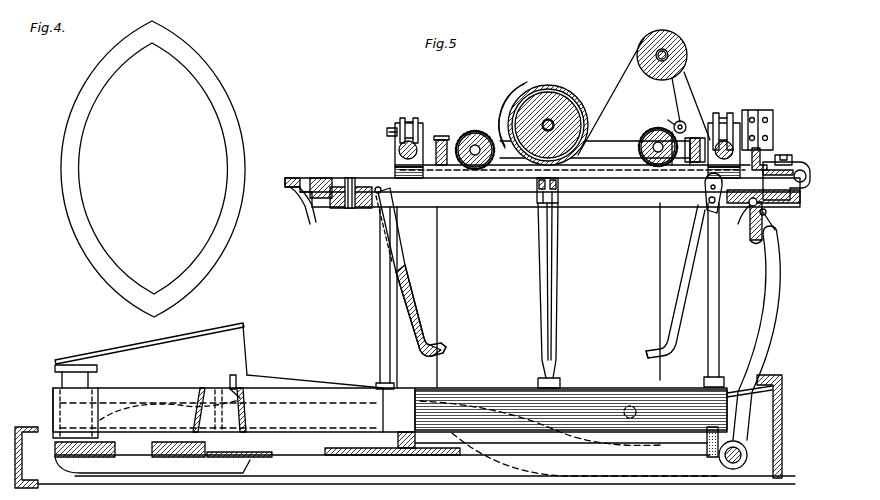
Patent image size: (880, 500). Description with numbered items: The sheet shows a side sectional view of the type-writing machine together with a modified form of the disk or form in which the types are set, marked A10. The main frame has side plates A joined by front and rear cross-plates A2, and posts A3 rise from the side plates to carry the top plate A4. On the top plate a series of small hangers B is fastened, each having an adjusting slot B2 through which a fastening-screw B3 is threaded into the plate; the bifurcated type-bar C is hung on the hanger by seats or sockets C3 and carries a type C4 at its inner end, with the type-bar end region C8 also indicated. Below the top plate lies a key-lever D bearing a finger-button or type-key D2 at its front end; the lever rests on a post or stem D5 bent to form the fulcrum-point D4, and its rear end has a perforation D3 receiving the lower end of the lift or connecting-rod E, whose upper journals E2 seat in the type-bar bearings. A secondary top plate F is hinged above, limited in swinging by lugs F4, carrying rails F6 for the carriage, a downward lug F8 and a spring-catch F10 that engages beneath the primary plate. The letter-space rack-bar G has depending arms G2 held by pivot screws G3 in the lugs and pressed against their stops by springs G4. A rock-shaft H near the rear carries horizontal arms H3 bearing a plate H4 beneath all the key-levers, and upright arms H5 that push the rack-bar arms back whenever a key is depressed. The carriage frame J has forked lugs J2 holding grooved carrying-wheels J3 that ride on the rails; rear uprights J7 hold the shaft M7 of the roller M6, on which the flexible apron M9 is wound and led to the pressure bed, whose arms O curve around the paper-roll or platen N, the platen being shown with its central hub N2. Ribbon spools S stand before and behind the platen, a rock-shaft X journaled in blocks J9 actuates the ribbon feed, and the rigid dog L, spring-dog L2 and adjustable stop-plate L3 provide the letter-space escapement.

In FIG. 4, the lens-shaped blank A10 is at (212, 123).
In FIG. 5, the side plate A is at (416, 464).
In FIG. 5, the cross-plate A2 is at (789, 432).
In FIG. 5, the post A3 is at (536, 295).
In FIG. 5, the top plate A4 is at (498, 329).
In FIG. 5, the plate or hanger B is at (362, 186).
In FIG. 5, the adjusting slot B2 is at (335, 178).
In FIG. 5, the fastening-screw B3 is at (351, 178).
In FIG. 5, the type-bar C is at (550, 265).
In FIG. 5, the seat or socket C3 is at (382, 190).
In FIG. 5, the type C4 is at (447, 351).
In FIG. 5, the lever link C8 is at (380, 216).
In FIG. 5, the lever D is at (390, 403).
In FIG. 5, the finger-button or type-key D2 is at (55, 369).
In FIG. 5, the perforation D3 is at (719, 373).
In FIG. 5, the fulcrum-point D4 is at (246, 402).
In FIG. 5, the post or stem D5 is at (229, 379).
In FIG. 5, the lift or connecting-rod E is at (554, 239).
In FIG. 5, the journal E2 is at (538, 201).
In FIG. 5, the secondary top plate F is at (542, 192).
In FIG. 5, the lug F4 is at (802, 162).
In FIG. 5, the rail or rod F6 is at (388, 146).
In FIG. 5, the lug F8 is at (767, 213).
In FIG. 5, the spring-catch or locking device F10 is at (298, 208).
In FIG. 5, the letter-space rack-bar G is at (766, 158).
In FIG. 5, the depending arm G2 is at (752, 254).
In FIG. 5, the pivot or screw G3 is at (752, 226).
In FIG. 5, the spring G4 is at (745, 208).
In FIG. 5, the rocking bar or rock-shaft H is at (747, 456).
In FIG. 5, the arm H3 is at (570, 438).
In FIG. 5, the plate or bar H4 is at (257, 450).
In FIG. 5, the upright arm H5 is at (757, 347).
In FIG. 5, the carriage frame J is at (441, 150).
In FIG. 5, the lug J2 is at (566, 150).
In FIG. 5, the grooved carrying-wheel J3 is at (727, 108).
In FIG. 5, the upright or standard J7 is at (691, 106).
In FIG. 5, the block J9 is at (688, 138).
In FIG. 5, the rock-shaft X is at (664, 117).
In FIG. 5, the rigid dog L is at (770, 111).
In FIG. 5, the spring-dog L2 is at (755, 112).
In FIG. 5, the adjustable stop-plate L3 is at (638, 411).
In FIG. 5, the roller M6 is at (688, 50).
In FIG. 5, the rod or shaft M7 is at (660, 78).
In FIG. 5, the flexible apron or paper-table M9 is at (626, 73).
In FIG. 5, the paper-roll or platen N is at (548, 125).
In FIG. 5, the wheel hub N2 is at (557, 123).
In FIG. 5, the arm O is at (512, 115).
In FIG. 5, the ribbon spool or roller S is at (566, 147).